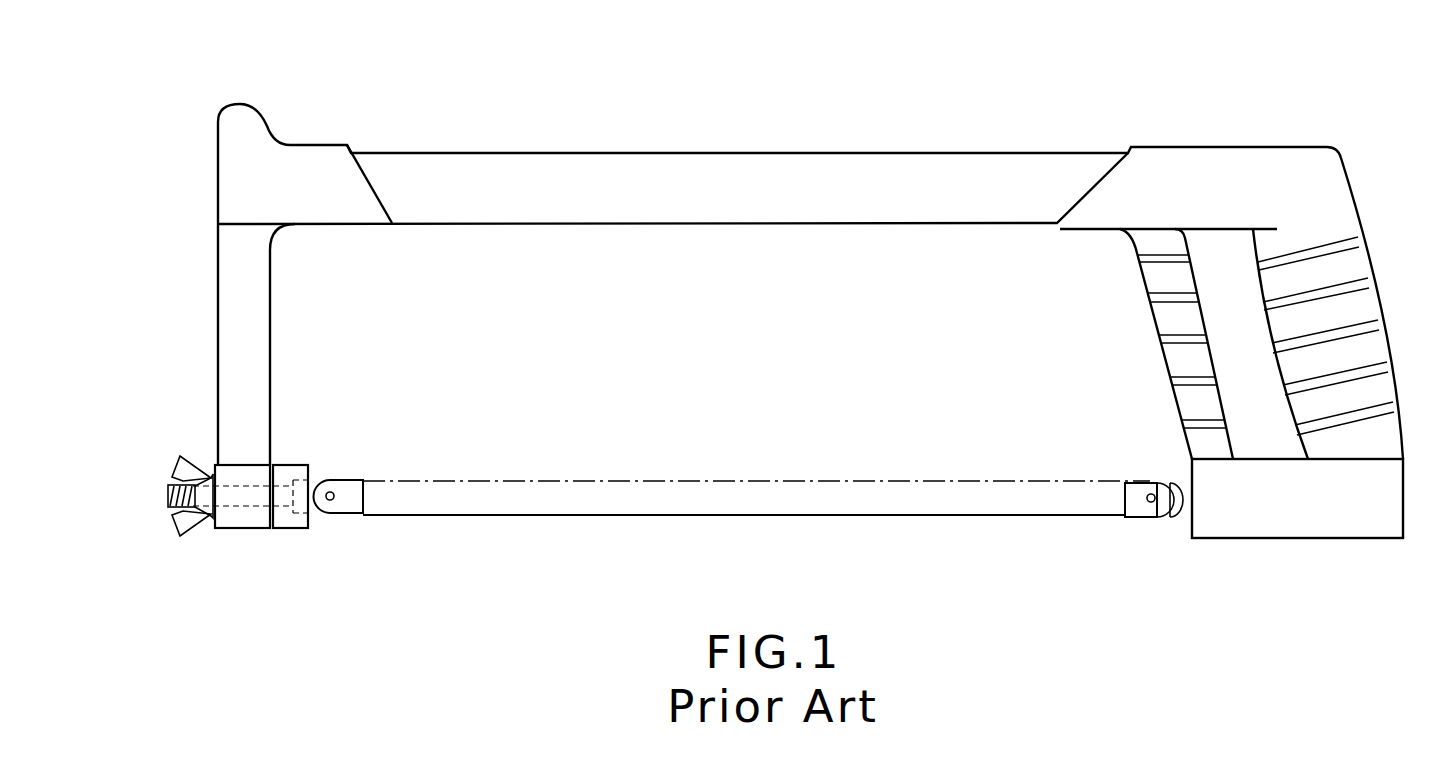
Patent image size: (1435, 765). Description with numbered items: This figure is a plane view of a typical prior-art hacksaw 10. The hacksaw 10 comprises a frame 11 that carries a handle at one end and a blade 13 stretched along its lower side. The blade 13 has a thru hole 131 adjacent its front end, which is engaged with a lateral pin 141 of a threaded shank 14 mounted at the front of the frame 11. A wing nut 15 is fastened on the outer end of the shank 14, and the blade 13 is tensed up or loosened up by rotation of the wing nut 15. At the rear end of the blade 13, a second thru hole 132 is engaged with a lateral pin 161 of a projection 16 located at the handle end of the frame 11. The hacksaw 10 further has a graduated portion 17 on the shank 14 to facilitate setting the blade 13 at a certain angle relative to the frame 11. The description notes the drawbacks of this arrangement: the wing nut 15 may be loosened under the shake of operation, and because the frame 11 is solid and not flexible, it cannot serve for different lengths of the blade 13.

The hacksaw 10 is at (1022, 130).
The frame 11 is at (826, 170).
The blade 13 is at (856, 490).
The thru hole 131 is at (340, 500).
The thru hole 132 is at (1140, 505).
The threaded shank 14 is at (178, 533).
The lateral pin 141 is at (330, 500).
The wing nut 15 is at (182, 460).
The projection 16 is at (1193, 533).
The lateral pin 161 is at (1152, 502).
The graduated portion 17 is at (285, 478).